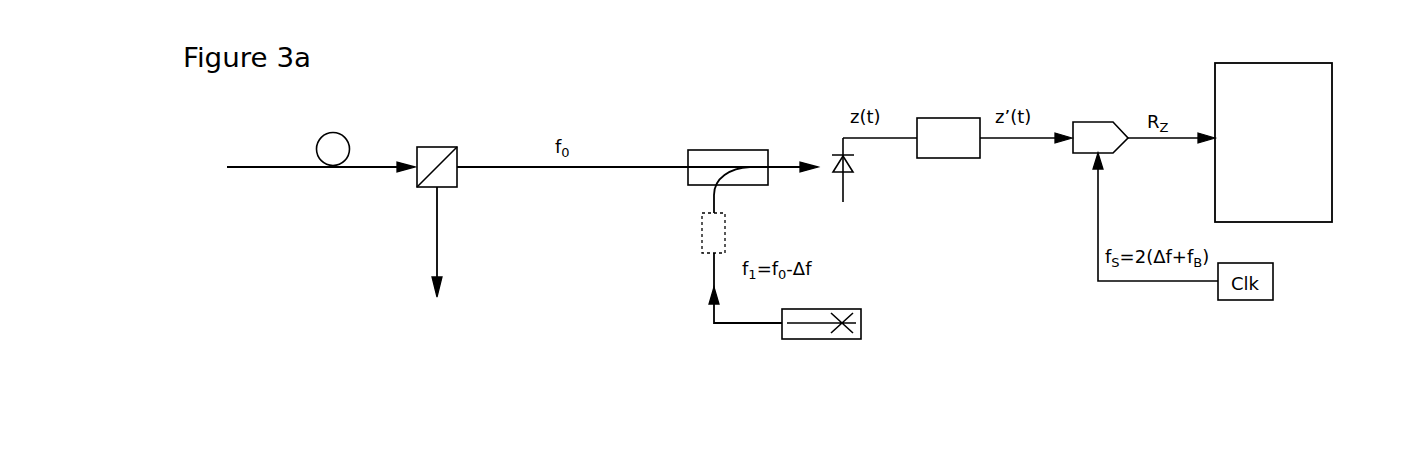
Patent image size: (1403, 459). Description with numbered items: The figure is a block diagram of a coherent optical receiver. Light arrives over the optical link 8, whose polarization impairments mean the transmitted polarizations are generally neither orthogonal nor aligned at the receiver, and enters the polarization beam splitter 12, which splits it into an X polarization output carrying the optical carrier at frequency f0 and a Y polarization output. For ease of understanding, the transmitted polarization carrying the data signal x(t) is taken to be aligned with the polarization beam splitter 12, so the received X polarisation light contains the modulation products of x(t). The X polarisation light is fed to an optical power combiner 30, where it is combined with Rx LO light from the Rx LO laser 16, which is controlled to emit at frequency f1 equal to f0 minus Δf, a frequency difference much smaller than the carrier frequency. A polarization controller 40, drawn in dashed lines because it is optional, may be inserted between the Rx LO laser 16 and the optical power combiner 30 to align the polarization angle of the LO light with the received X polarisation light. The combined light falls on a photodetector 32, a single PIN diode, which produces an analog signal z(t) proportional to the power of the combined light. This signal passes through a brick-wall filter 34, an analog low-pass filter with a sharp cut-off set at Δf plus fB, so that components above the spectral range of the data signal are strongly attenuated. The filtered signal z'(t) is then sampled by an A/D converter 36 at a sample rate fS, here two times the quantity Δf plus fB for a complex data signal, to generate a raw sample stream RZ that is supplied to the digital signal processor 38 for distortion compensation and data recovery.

The optical link 8 is at (296, 167).
The polarization beam splitter 12 is at (437, 147).
The optical power combiner 30 is at (739, 150).
The polarization controller 40 is at (702, 230).
The Rx LO laser 16 is at (822, 339).
The photodetector 32 is at (853, 172).
The brick-wall filter 34 is at (956, 118).
The A/D converter 36 is at (1095, 122).
The digital signal processor 38 is at (1257, 117).